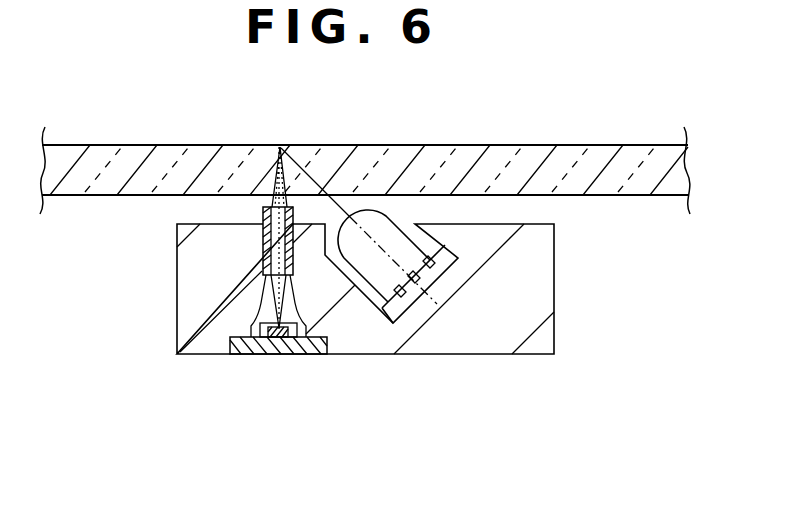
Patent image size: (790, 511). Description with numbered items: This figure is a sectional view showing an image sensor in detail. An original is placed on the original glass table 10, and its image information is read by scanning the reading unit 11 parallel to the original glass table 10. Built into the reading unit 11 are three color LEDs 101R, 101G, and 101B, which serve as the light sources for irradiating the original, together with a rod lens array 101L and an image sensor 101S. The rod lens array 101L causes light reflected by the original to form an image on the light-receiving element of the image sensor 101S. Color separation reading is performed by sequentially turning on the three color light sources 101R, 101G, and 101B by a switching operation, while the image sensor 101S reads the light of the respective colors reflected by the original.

The original glass table 10 is at (603, 147).
The reading unit 11 is at (552, 330).
The rod lens array 101L is at (263, 262).
The image sensor 101S is at (260, 331).
The red LED 101R is at (398, 296).
The green LED 101G is at (412, 282).
The blue LED 101B is at (428, 267).